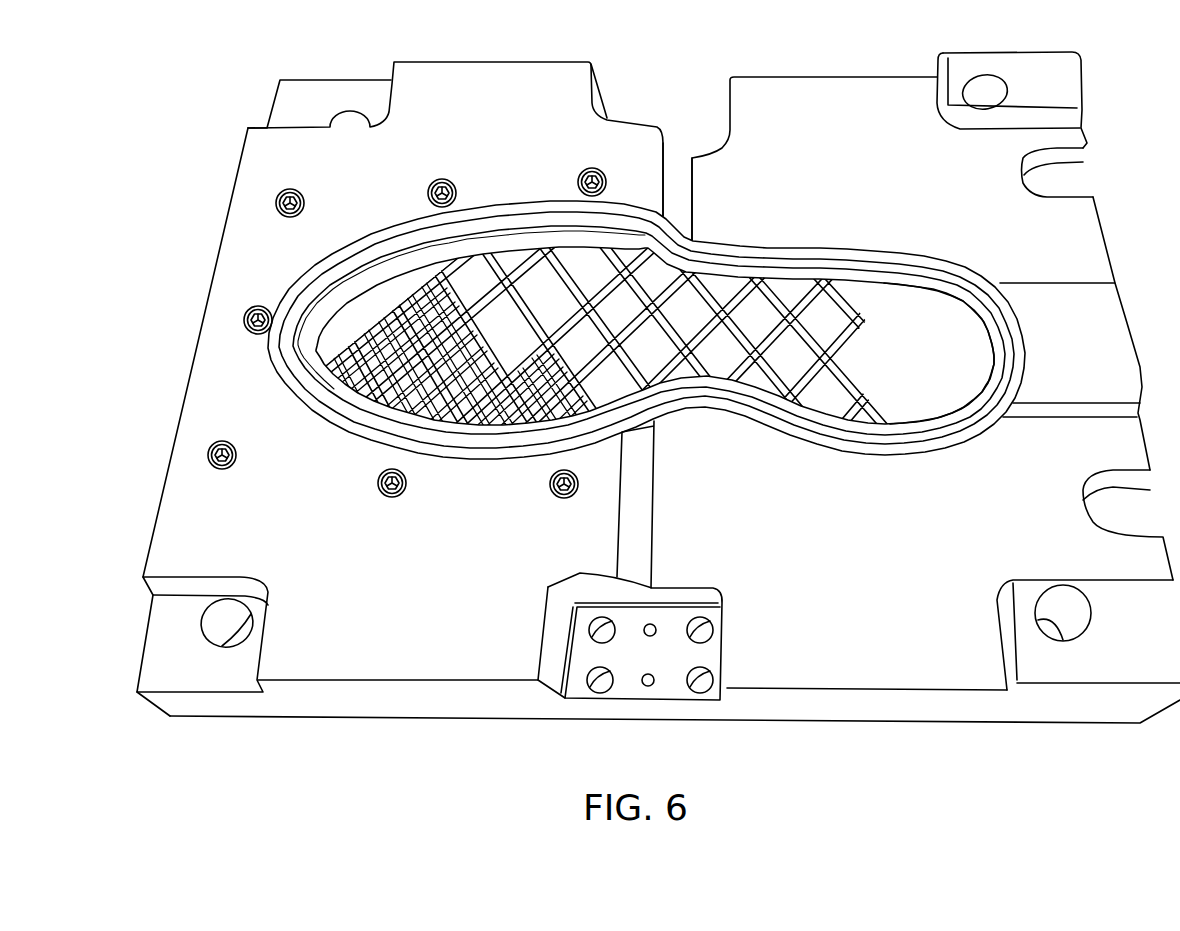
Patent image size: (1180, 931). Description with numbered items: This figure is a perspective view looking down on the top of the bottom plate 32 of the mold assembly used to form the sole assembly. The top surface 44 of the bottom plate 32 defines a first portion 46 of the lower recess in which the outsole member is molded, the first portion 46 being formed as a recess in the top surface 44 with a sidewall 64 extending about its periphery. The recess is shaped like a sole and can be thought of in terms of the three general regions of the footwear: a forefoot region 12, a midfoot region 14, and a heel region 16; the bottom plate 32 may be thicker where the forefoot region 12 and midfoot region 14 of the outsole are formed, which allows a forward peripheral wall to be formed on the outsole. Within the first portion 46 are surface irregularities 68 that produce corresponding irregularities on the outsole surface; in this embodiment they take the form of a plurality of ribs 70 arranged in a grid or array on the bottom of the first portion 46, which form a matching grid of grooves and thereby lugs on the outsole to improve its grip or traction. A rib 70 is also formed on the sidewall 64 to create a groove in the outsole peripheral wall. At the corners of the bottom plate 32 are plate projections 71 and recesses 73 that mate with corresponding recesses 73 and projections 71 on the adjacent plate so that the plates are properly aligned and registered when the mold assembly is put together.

The bottom plate 32 is at (490, 61).
The top surface 44 is at (367, 174).
The first portion 46 is at (877, 295).
The forefoot region 12 is at (384, 337).
The midfoot region 14 is at (628, 502).
The heel region 16 is at (945, 362).
The sidewall 64 is at (646, 247).
The surface irregularities 68 is at (807, 387).
The ribs 70 is at (467, 258).
The plate projections 71 is at (1052, 84).
The recesses 73 is at (312, 102).